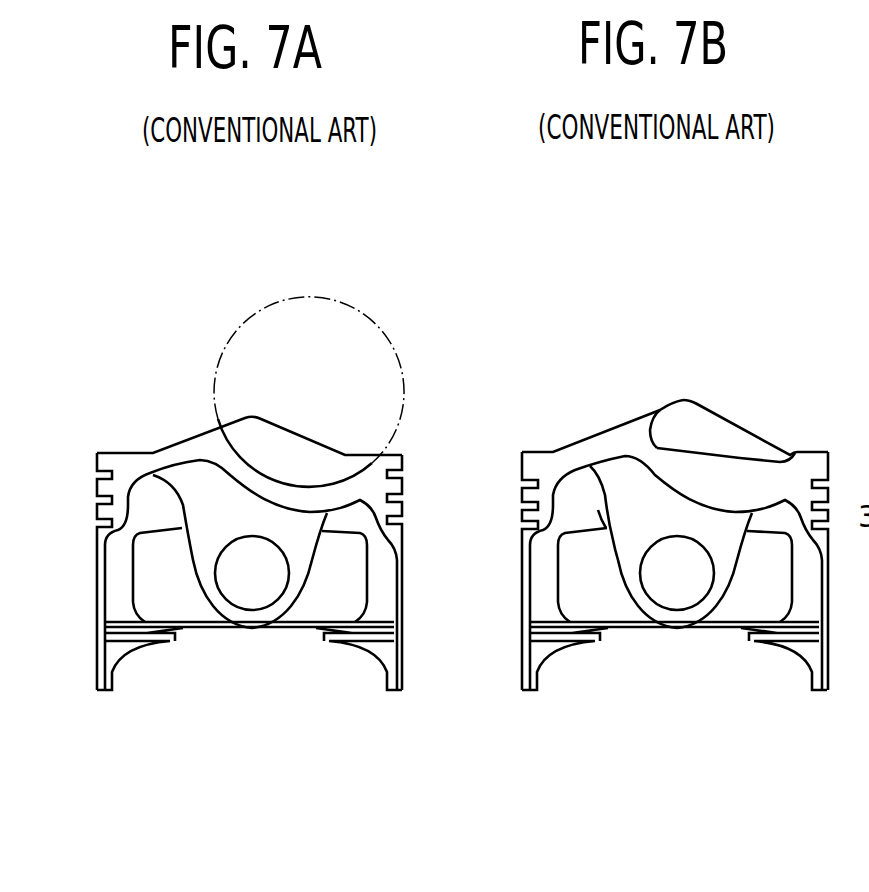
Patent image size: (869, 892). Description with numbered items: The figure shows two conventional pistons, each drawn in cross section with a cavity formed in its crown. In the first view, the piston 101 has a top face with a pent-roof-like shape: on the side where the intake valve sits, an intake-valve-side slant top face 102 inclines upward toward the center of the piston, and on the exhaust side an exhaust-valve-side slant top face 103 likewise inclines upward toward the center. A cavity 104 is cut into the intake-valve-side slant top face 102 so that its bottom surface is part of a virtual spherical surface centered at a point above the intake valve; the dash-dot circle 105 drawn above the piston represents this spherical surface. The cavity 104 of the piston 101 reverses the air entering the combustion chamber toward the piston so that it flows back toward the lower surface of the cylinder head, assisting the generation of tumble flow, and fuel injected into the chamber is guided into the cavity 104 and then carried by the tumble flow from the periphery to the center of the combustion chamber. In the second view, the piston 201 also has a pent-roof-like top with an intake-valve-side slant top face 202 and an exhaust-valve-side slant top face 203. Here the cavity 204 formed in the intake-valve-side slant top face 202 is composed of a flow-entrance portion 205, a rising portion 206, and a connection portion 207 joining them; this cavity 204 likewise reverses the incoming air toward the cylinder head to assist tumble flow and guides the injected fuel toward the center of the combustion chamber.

In FIG. 7A, the piston 101 is at (90, 632).
In FIG. 7A, the intake-valve-side slant top face 102 is at (297, 433).
In FIG. 7A, the exhaust-valve-side slant top face 103 is at (184, 441).
In FIG. 7A, the cavity 104 is at (302, 483).
In FIG. 7A, the spherical combustion chamber outline 105 is at (347, 305).
In FIG. 7B, the piston 201 is at (515, 633).
In FIG. 7B, the intake-valve-side slant top face 202 is at (698, 406).
In FIG. 7B, the exhaust-valve-side slant top face 203 is at (590, 437).
In FIG. 7B, the cavity 204 is at (730, 449).
In FIG. 7B, the flow-entrance portion 205 is at (790, 452).
In FIG. 7B, the rising portion 206 is at (655, 412).
In FIG. 7B, the connection portion 207 is at (700, 452).